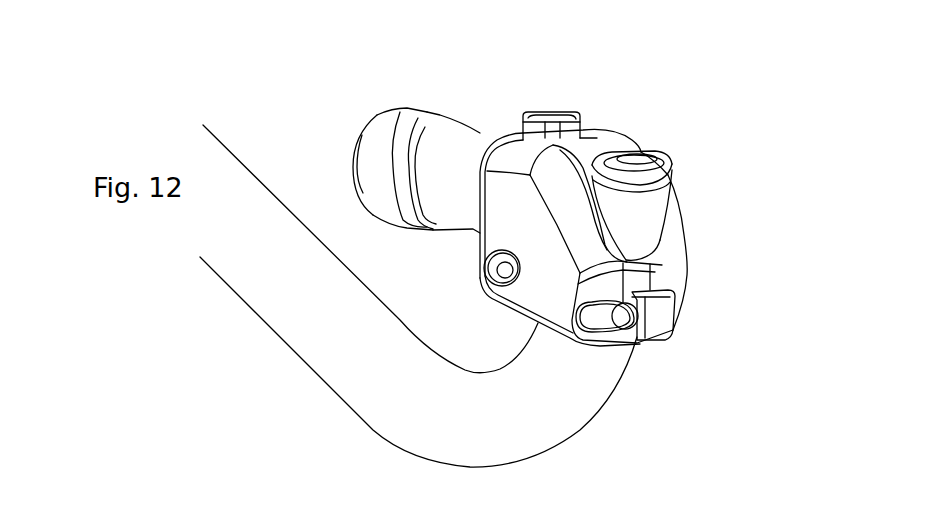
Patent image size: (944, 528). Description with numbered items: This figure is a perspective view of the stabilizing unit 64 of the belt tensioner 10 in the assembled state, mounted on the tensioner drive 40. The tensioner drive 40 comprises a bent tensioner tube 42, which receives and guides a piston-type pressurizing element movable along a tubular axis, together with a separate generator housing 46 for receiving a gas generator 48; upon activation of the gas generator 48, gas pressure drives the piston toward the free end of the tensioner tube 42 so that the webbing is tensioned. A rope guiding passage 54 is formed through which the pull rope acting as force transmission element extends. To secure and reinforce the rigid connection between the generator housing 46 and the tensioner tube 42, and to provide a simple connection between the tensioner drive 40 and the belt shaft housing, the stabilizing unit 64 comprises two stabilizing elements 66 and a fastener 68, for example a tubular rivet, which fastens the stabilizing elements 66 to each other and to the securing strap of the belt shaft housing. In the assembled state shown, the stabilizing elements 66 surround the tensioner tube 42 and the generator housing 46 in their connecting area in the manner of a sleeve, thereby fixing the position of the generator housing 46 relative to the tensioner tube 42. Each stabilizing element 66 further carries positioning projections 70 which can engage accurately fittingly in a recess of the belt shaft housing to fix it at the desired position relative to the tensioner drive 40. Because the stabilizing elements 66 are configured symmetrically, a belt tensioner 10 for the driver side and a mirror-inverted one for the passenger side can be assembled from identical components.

The belt tensioner 10 is at (630, 89).
The tensioner drive 40 is at (525, 209).
The tensioner tube 42 is at (292, 331).
The generator housing 46 is at (472, 134).
The gas generator 48 is at (360, 152).
The rope guiding passage 54 is at (641, 155).
The stabilizing unit 64 is at (697, 219).
The stabilizing elements 66 is at (503, 231).
The fastener 68 is at (500, 270).
The positioning projections 70 is at (543, 114).